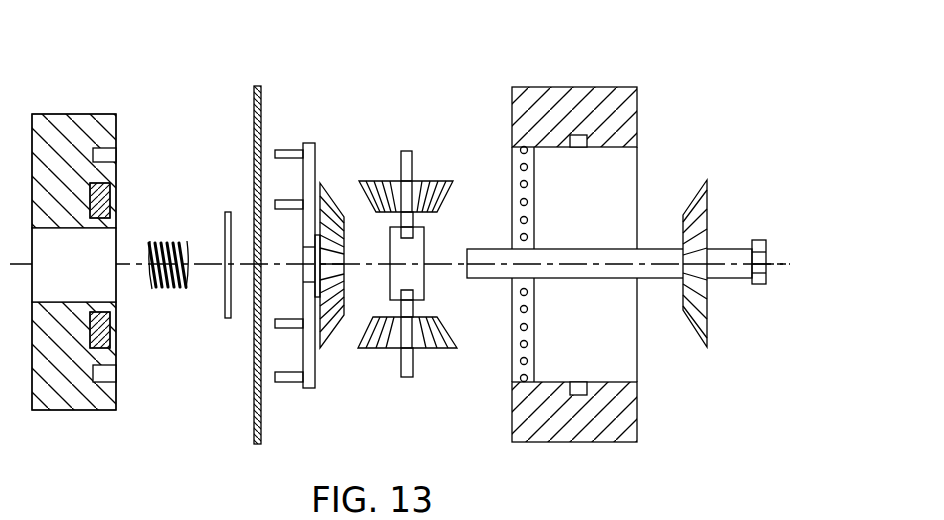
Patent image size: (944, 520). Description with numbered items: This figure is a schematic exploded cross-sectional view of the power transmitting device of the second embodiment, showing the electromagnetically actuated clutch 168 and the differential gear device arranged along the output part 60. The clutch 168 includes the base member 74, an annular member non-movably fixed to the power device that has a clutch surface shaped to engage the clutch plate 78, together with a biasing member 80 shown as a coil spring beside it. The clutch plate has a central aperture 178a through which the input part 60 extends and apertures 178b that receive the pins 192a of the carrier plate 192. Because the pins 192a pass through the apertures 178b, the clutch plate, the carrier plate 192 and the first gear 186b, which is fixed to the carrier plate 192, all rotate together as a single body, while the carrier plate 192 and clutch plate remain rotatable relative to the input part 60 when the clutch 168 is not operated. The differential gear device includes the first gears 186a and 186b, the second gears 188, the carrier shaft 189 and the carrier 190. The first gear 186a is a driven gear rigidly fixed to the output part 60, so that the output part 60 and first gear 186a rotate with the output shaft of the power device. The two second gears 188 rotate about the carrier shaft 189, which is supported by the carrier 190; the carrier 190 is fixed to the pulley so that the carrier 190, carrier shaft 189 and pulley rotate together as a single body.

The output part 60 is at (582, 270).
The base member 74 is at (75, 132).
The clutch plate 78 is at (252, 111).
The biasing member 80 is at (166, 243).
The electromagnetically actuated clutch 168 is at (243, 62).
The central aperture 178a is at (250, 278).
The apertures 178b is at (253, 383).
The first gear 186a is at (688, 212).
The first gear 186b is at (332, 212).
The second gears 188 is at (430, 198).
The carrier shaft 189 is at (405, 167).
The carrier 190 is at (568, 113).
The carrier plate 192 is at (312, 375).
The pins 192a is at (289, 380).